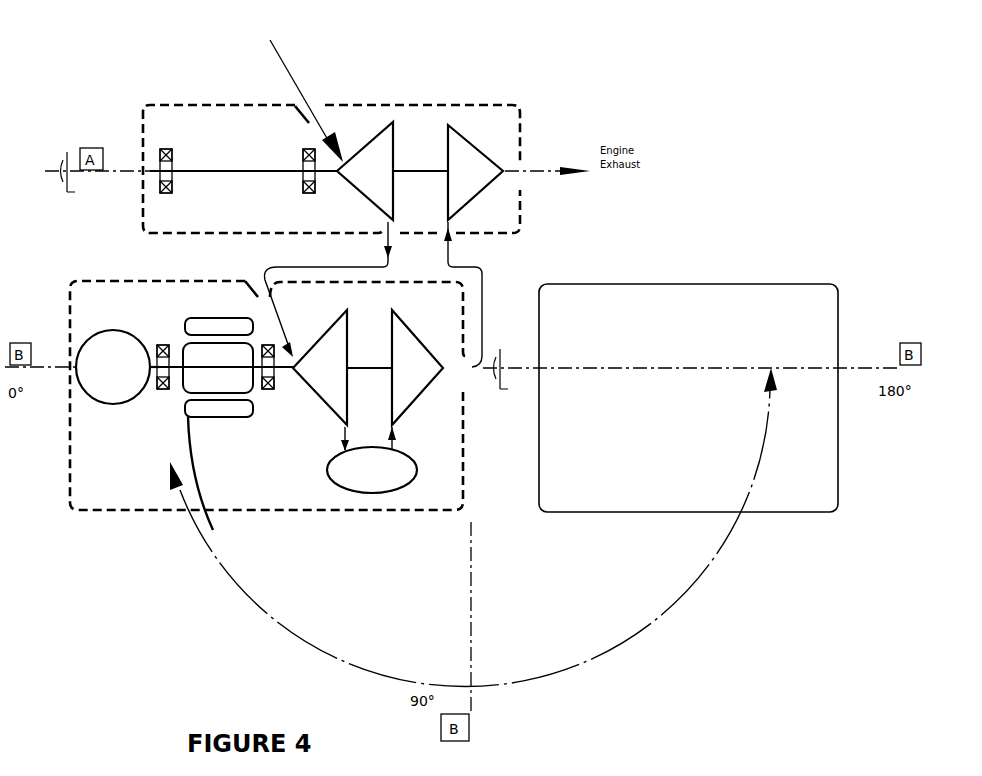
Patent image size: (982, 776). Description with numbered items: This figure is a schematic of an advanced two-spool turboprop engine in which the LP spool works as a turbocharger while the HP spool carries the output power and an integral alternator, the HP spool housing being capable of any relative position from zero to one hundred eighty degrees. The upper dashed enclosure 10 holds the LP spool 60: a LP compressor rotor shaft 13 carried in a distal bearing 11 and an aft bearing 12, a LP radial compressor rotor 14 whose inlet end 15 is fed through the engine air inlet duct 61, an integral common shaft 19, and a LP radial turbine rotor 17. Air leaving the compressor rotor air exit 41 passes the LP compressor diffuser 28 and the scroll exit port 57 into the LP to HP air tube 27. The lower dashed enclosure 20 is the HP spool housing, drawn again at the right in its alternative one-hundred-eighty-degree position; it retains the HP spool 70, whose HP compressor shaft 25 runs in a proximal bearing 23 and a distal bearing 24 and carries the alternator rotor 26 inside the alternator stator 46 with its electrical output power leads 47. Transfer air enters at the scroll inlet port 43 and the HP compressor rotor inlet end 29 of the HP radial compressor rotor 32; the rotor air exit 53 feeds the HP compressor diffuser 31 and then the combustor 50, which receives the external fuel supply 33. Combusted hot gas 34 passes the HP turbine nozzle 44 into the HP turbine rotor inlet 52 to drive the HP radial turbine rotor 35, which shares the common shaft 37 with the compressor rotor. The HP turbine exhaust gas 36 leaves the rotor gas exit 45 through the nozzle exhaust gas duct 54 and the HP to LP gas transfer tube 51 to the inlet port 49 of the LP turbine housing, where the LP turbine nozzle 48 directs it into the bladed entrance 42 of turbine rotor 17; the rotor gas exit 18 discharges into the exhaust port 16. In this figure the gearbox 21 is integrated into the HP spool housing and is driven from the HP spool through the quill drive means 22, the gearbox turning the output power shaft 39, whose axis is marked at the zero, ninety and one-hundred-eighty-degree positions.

The gas turbine engine 10 is at (185, 100).
The distal bearing 11 is at (155, 166).
The aft bearing 12 is at (302, 150).
The LP compressor rotor shaft 13 is at (248, 168).
The LP radial compressor rotor 14 is at (378, 140).
The LP compressor rotor inlet end 15 is at (316, 112).
The LP turbine nozzle exhaust port 16 is at (535, 163).
The LP radial turbine rotor 17 is at (478, 155).
The LP turbine rotor gas exit 18 is at (505, 165).
The integral common shaft 19 is at (425, 165).
The auxiliary power unit 20 is at (122, 265).
The gearbox 21 is at (100, 402).
The output power drive means 22 is at (150, 370).
The proximal shaft bearing 23 is at (162, 343).
The distal bearing 24 is at (268, 393).
The HP compressor shaft 25 is at (178, 342).
The alternator rotor 26 is at (260, 405).
The LP to HP air tube 27 is at (258, 275).
The LP compressor diffuser 28 is at (385, 250).
The HP compressor rotor inlet end 29 is at (300, 395).
The HP compressor diffuser 31 is at (330, 400).
The HP radial compressor rotor 32 is at (325, 425).
The external fuel supply 33 is at (377, 494).
The combusted hot gas 34 is at (425, 450).
The HP radial turbine rotor 35 is at (413, 393).
The HP turbine exhaust gas 36 is at (480, 372).
The common shaft 37 is at (378, 362).
The output power shaft 39 is at (135, 160).
The LP compressor rotor air exit 41 is at (392, 122).
The LP turbine rotor entrance 42 is at (448, 125).
The HP compressor scroll inlet port 43 is at (247, 280).
The HP turbine nozzle 44 is at (403, 432).
The HP turbine rotor gas exit 45 is at (465, 392).
The alternator stator 46 is at (205, 415).
The electrical output power leads 47 is at (213, 530).
The LP turbine nozzle 48 is at (453, 218).
The HP exhaust gas inlet port 49 is at (460, 235).
The combustor 50 is at (420, 497).
The HP to LP gas transfer tube 51 is at (555, 262).
The HP turbine rotor inlet 52 is at (388, 318).
The HP compressor rotor air exit 53 is at (346, 309).
The HP turbine nozzle exhaust gas duct 54 is at (447, 375).
The LP compressor scroll exit port 57 is at (388, 213).
The LP spool 60 is at (127, 163).
The LP compressor air inlet duct 61 is at (327, 107).
The HP spool 70 is at (136, 591).